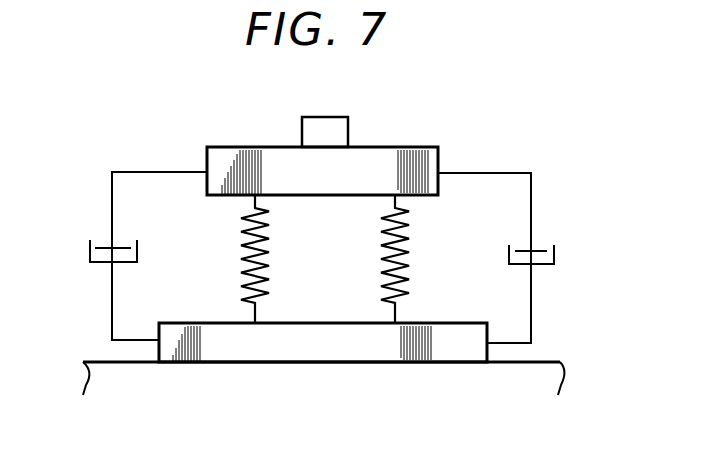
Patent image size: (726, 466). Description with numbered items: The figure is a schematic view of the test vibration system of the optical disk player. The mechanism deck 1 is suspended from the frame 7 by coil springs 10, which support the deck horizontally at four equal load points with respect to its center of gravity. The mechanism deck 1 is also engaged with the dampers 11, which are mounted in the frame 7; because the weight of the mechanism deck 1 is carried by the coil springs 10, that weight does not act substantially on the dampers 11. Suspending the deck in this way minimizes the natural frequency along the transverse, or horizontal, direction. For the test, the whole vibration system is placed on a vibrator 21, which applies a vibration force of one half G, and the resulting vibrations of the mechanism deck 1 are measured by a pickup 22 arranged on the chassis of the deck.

The mechanism deck 1 is at (280, 150).
The pickup 22 is at (337, 130).
The coil springs 10 is at (242, 240).
The dampers 11 is at (90, 248).
The frame 7 is at (247, 348).
The vibrator 21 is at (530, 373).